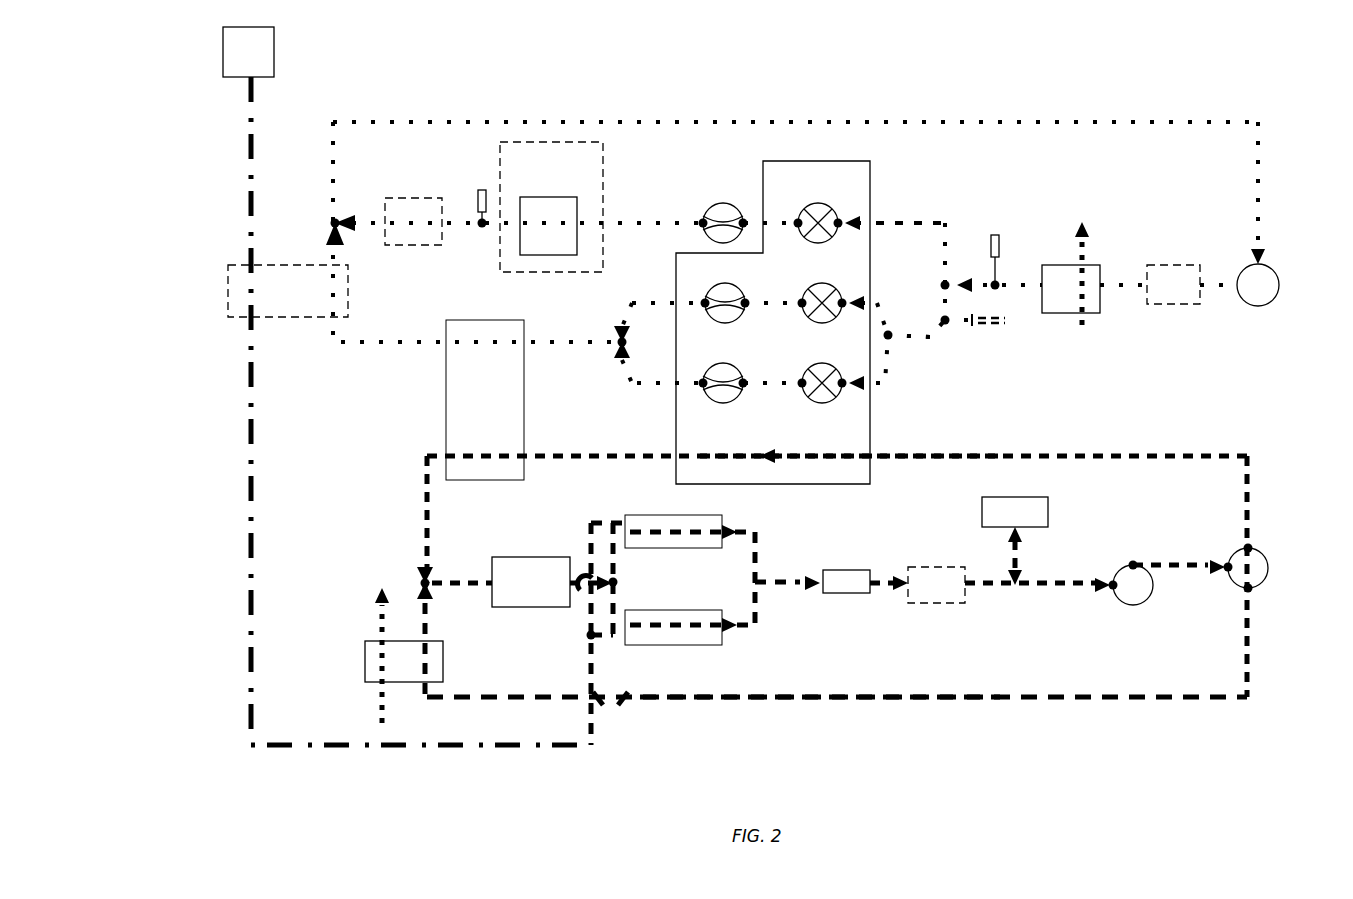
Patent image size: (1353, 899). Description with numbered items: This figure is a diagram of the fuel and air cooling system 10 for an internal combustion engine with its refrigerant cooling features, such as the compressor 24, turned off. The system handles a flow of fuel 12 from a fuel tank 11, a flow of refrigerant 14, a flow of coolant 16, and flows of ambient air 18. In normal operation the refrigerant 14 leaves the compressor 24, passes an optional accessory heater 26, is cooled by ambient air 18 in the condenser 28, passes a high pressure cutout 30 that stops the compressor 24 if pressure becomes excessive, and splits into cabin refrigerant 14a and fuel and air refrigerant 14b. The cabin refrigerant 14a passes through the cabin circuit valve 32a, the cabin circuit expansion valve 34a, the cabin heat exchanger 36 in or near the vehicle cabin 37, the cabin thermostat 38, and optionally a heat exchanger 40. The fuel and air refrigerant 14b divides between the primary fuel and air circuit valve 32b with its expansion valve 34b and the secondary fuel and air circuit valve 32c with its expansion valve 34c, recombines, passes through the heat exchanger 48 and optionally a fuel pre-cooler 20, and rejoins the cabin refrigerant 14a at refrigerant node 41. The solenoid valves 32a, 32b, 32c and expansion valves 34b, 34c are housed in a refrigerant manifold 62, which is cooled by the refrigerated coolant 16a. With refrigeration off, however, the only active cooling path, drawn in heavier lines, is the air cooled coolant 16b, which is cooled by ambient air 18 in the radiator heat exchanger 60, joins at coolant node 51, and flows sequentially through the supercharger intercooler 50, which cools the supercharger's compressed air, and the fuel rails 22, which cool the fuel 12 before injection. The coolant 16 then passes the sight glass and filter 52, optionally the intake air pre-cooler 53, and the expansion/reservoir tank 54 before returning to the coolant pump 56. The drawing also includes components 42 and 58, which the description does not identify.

The fuel and air cooling system 10 is at (533, 66).
The fuel tank 11 is at (260, 61).
The flow of fuel 12 is at (256, 128).
The flow of refrigerant 14 is at (657, 125).
The flow of cabin refrigerant 14a is at (887, 218).
The flow of fuel and air refrigerant 14b is at (910, 318).
The flow of coolant 16 is at (1180, 560).
The flow of refrigerated coolant 16a is at (953, 458).
The flow of air cooled coolant 16b is at (805, 690).
The flow of ambient air 18 is at (1085, 253).
The fuel pre-cooler 20 is at (302, 296).
The fuel rails 22 is at (697, 610).
The compressor 24 is at (1270, 278).
The accessory heater 26 is at (1170, 265).
The condenser 28 is at (1060, 266).
The high pressure cutout 30 is at (994, 233).
The cabin circuit valve 32a is at (815, 212).
The primary fuel and air circuit valve 32b is at (820, 293).
The secondary fuel and air circuit valve 32c is at (818, 370).
The cabin circuit expansion valve 34a is at (724, 203).
The primary fuel and air circuit expansion valve 34b is at (735, 300).
The secondary fuel and air circuit expansion valve 34c is at (728, 366).
The cabin heat exchanger 36 is at (564, 219).
The vehicle cabin 37 is at (593, 178).
The cabin thermostat 38 is at (481, 190).
The heat exchanger 40 is at (434, 221).
The refrigerant node 41 is at (333, 220).
The orifice 42 is at (990, 325).
The heat exchanger 48 is at (506, 399).
The intake air intercooler 50 is at (538, 579).
The coolant node 51 is at (420, 580).
The sight glass and filter 52 is at (857, 592).
The intake air pre-cooler 53 is at (948, 593).
The expansion/reservoir tank 54 is at (1018, 521).
The coolant pump 56 is at (1144, 594).
The evaporator 58 is at (1259, 577).
The heat exchanger 60 is at (414, 669).
The refrigerant manifold 62 is at (784, 428).